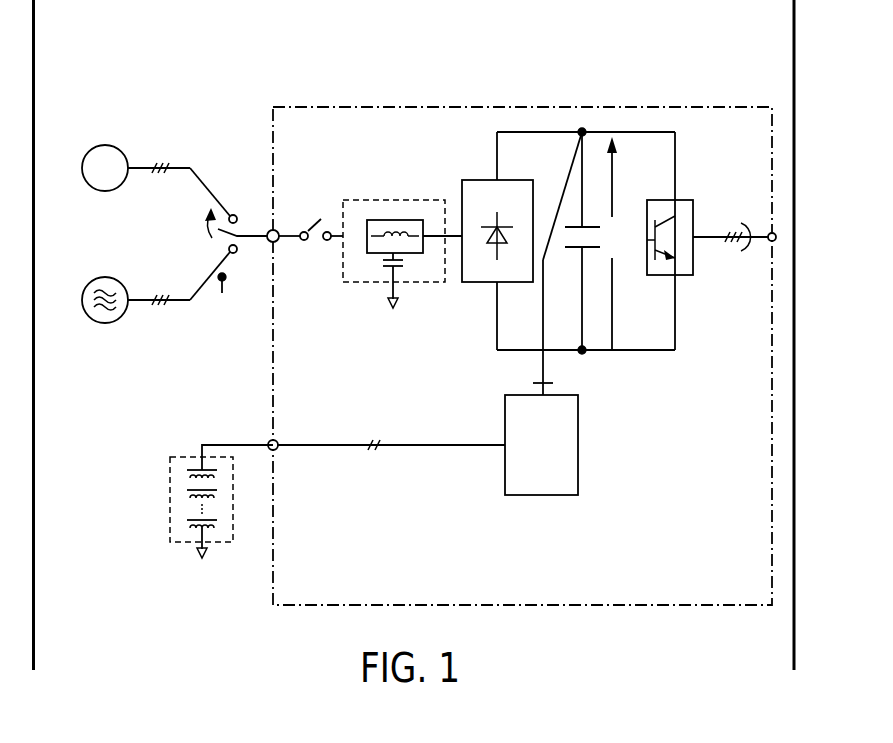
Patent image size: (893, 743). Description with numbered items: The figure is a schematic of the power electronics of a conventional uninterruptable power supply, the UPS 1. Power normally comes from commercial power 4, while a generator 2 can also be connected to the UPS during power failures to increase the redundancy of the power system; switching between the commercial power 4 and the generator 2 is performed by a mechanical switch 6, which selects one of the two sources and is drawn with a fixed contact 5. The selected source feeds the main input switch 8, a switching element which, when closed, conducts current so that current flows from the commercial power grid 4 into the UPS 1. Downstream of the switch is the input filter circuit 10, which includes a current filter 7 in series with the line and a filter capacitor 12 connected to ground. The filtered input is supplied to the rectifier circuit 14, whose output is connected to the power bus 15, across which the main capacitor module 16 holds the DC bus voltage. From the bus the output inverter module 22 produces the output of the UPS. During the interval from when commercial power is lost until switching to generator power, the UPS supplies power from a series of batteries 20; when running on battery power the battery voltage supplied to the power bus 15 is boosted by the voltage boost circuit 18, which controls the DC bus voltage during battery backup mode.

The UPS 1 is at (733, 86).
The generator 2 is at (105, 145).
The commercial power 4 is at (105, 277).
The fixed contact 5 is at (224, 289).
The mechanical switch 6 is at (228, 207).
The current filter 7 is at (417, 220).
The main input switch 8 is at (300, 223).
The input filter circuit 10 is at (395, 198).
The filter capacitor 12 is at (385, 272).
The rectifier circuit 14 is at (482, 180).
The power bus 15 is at (650, 133).
The main capacitor module 16 is at (600, 212).
The voltage boost circuit 18 is at (545, 497).
The batteries 20 is at (182, 455).
The output inverter module 22 is at (683, 200).